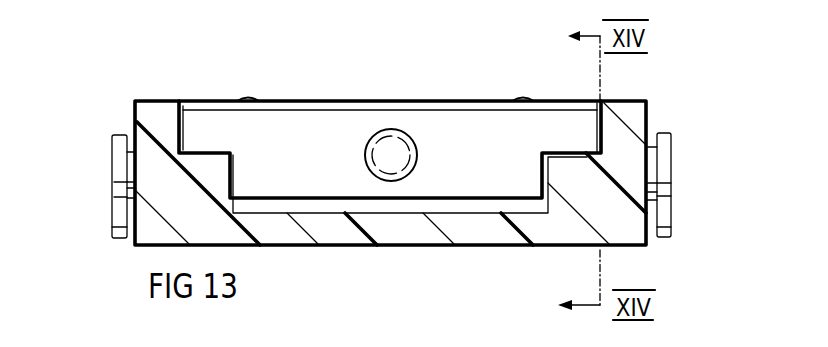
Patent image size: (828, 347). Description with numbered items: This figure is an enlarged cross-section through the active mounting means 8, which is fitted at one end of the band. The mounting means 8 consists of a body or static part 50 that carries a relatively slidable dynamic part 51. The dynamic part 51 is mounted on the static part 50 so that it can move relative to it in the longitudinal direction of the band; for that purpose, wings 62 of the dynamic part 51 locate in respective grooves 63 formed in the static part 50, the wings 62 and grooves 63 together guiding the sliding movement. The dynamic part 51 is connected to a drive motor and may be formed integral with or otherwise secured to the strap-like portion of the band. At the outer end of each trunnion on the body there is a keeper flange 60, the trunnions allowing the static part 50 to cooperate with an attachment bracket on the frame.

The active mounting means 8 is at (635, 101).
The static part 50 is at (338, 227).
The dynamic part 51 is at (318, 143).
The keeper flange 60 is at (112, 171).
The wings 62 is at (218, 130).
The grooves 63 is at (185, 133).